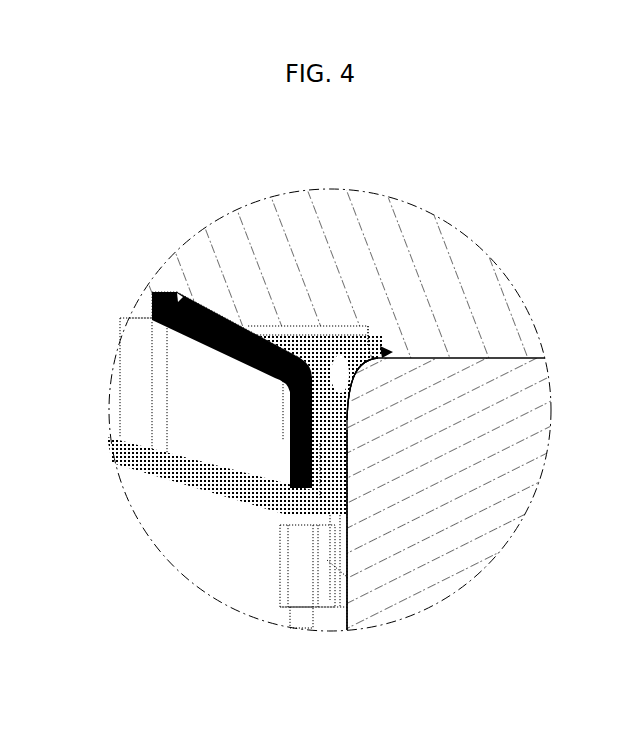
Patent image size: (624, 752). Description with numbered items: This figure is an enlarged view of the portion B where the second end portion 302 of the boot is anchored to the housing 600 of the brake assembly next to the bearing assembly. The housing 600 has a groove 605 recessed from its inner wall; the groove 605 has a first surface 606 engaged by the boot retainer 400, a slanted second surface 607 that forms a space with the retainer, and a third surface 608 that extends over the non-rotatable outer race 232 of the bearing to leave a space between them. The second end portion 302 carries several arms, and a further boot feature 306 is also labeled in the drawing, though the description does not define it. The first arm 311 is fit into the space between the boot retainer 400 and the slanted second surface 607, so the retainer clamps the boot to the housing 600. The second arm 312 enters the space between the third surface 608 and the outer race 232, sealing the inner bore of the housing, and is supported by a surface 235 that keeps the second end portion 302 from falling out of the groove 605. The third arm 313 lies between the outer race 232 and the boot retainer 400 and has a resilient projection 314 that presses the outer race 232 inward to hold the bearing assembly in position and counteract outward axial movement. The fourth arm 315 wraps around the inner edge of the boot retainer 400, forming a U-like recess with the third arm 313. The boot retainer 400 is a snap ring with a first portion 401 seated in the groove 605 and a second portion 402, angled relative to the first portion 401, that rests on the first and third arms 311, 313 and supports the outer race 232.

The housing 600 is at (500, 300).
The non-rotatable outer race 232 is at (420, 567).
The surface 235 is at (513, 360).
The fourth arm 315 is at (287, 447).
The second portion 402 is at (285, 480).
The boot retainer 400 is at (248, 367).
The first portion 401 is at (167, 322).
The first arm 311 is at (247, 316).
The groove 605 is at (236, 301).
The first surface 606 is at (197, 299).
The second surface 607 is at (282, 340).
The second arm 312 is at (370, 356).
The third surface 608 is at (378, 358).
The second end portion 302 is at (288, 518).
The fastener head 306 is at (347, 588).
The third arm 313 is at (320, 443).
The projection 314 is at (347, 500).
The portion B is at (467, 237).